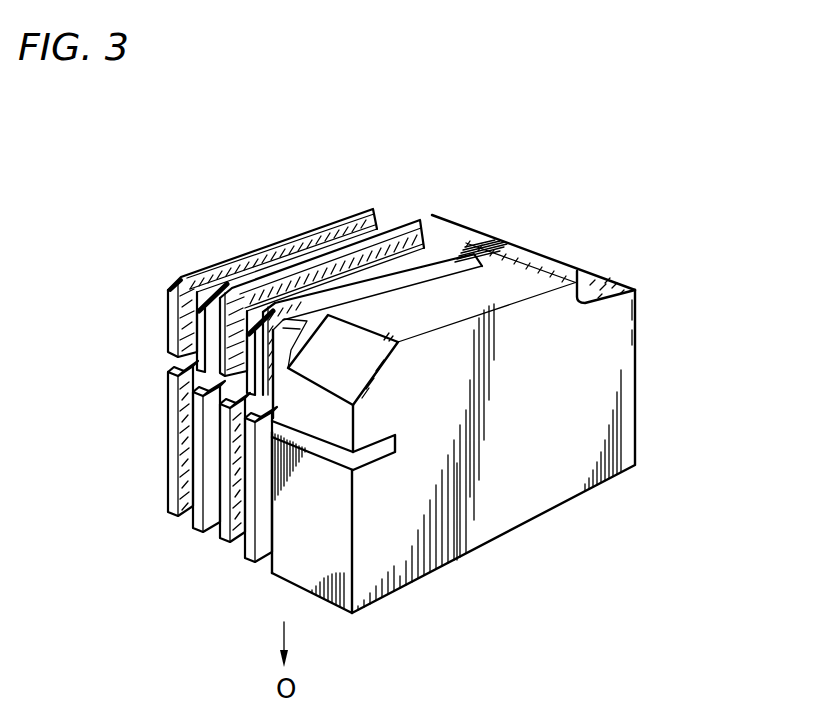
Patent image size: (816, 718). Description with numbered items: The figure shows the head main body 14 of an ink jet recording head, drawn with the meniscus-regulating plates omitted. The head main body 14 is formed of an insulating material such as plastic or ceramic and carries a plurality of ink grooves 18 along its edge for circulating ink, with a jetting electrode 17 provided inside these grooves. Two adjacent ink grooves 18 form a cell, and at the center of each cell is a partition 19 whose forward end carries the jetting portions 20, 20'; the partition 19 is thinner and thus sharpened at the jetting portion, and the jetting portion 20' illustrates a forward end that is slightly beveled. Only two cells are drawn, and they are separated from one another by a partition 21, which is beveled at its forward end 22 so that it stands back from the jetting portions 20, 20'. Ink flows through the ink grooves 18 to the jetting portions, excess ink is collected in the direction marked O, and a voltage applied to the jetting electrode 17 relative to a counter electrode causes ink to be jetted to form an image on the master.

The head main body 14 is at (593, 372).
The jetting electrode 17 is at (353, 233).
The ink grooves 18 is at (463, 232).
The partition 19 is at (250, 362).
The jetting portion 20 is at (129, 379).
The jetting portion 20' is at (176, 338).
The partition 21 is at (272, 298).
The forward end 22 is at (178, 283).